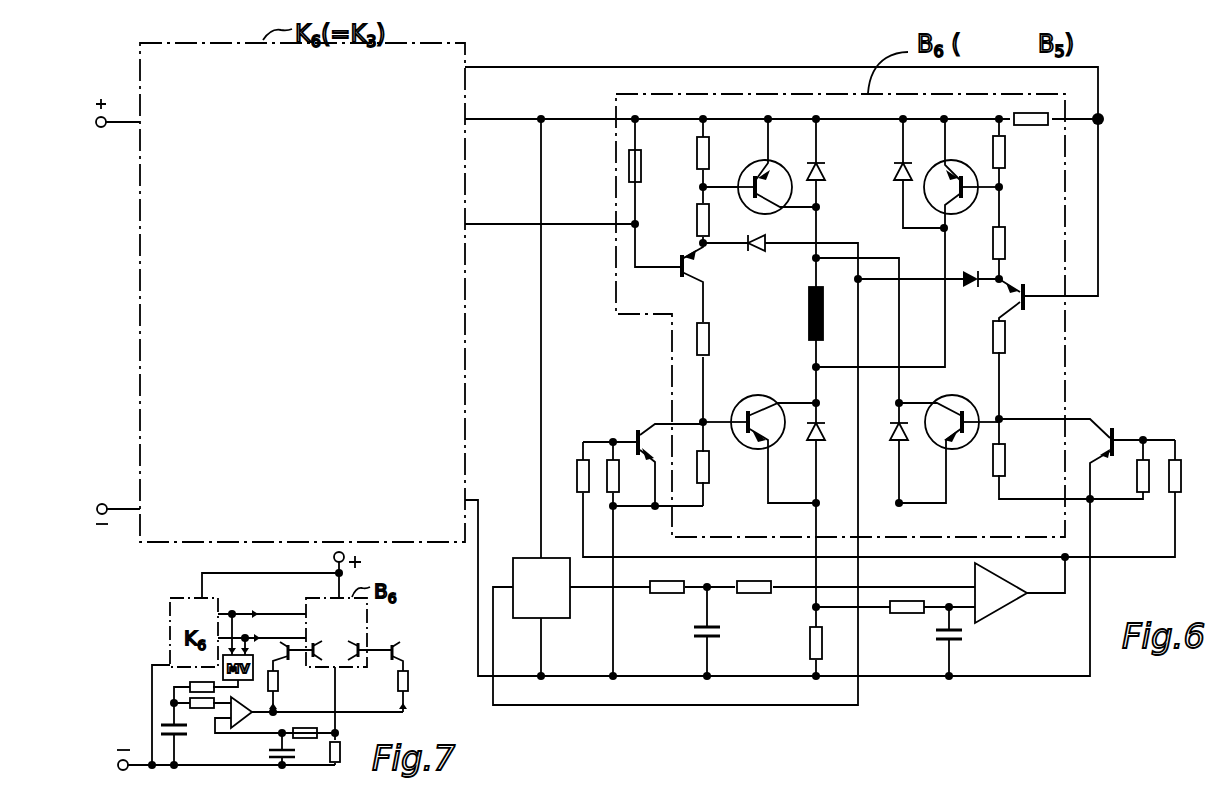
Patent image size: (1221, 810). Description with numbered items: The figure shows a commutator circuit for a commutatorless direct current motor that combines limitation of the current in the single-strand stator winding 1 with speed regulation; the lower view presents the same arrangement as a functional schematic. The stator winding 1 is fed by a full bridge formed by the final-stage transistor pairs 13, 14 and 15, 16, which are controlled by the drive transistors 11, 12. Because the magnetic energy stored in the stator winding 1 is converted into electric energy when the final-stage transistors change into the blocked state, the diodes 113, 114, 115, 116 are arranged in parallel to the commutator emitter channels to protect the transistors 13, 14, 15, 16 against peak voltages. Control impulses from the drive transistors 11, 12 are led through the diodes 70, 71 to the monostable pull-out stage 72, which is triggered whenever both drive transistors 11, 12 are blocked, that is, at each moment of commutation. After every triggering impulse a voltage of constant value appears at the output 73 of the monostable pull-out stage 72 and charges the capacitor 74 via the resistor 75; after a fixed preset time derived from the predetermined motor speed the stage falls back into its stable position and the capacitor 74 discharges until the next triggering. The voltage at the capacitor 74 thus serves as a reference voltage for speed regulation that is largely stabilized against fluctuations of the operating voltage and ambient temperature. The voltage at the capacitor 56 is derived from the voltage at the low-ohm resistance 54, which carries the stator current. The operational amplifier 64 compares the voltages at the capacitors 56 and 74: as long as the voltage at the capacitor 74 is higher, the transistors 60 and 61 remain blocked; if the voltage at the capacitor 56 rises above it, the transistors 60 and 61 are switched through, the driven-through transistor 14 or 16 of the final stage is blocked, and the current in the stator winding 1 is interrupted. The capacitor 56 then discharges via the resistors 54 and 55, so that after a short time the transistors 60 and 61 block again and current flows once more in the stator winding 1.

In FIG. 6, the stator winding 1 is at (854, 330).
In FIG. 6, the drive transistor 11 is at (1028, 298).
In FIG. 6, the drive transistor 12 is at (689, 282).
In FIG. 6, the final-stage transistor 13 is at (777, 166).
In FIG. 6, the final-stage transistor 14 is at (773, 437).
In FIG. 7, the final-stage transistor 14 is at (320, 639).
In FIG. 6, the final-stage transistor 15 is at (897, 243).
In FIG. 6, the final-stage transistor 16 is at (940, 437).
In FIG. 7, the final-stage transistor 16 is at (355, 639).
In FIG. 6, the low-ohm resistance 54 is at (801, 641).
In FIG. 6, the resistor 55 is at (895, 617).
In FIG. 6, the capacitor 56 is at (941, 641).
In FIG. 6, the transistor 60 is at (1090, 503).
In FIG. 6, the transistor 61 is at (821, 538).
In FIG. 6, the operational amplifier 64 is at (1001, 593).
In FIG. 6, the diode 70 is at (928, 289).
In FIG. 6, the diode 71 is at (675, 470).
In FIG. 6, the monostable pull-out stage 72 is at (541, 588).
In FIG. 6, the output 73 is at (610, 599).
In FIG. 6, the capacitor 74 is at (698, 631).
In FIG. 6, the resistor 75 is at (692, 597).
In FIG. 6, the diode 113 is at (834, 188).
In FIG. 6, the diode 114 is at (832, 505).
In FIG. 6, the diode 115 is at (905, 173).
In FIG. 6, the diode 116 is at (888, 453).